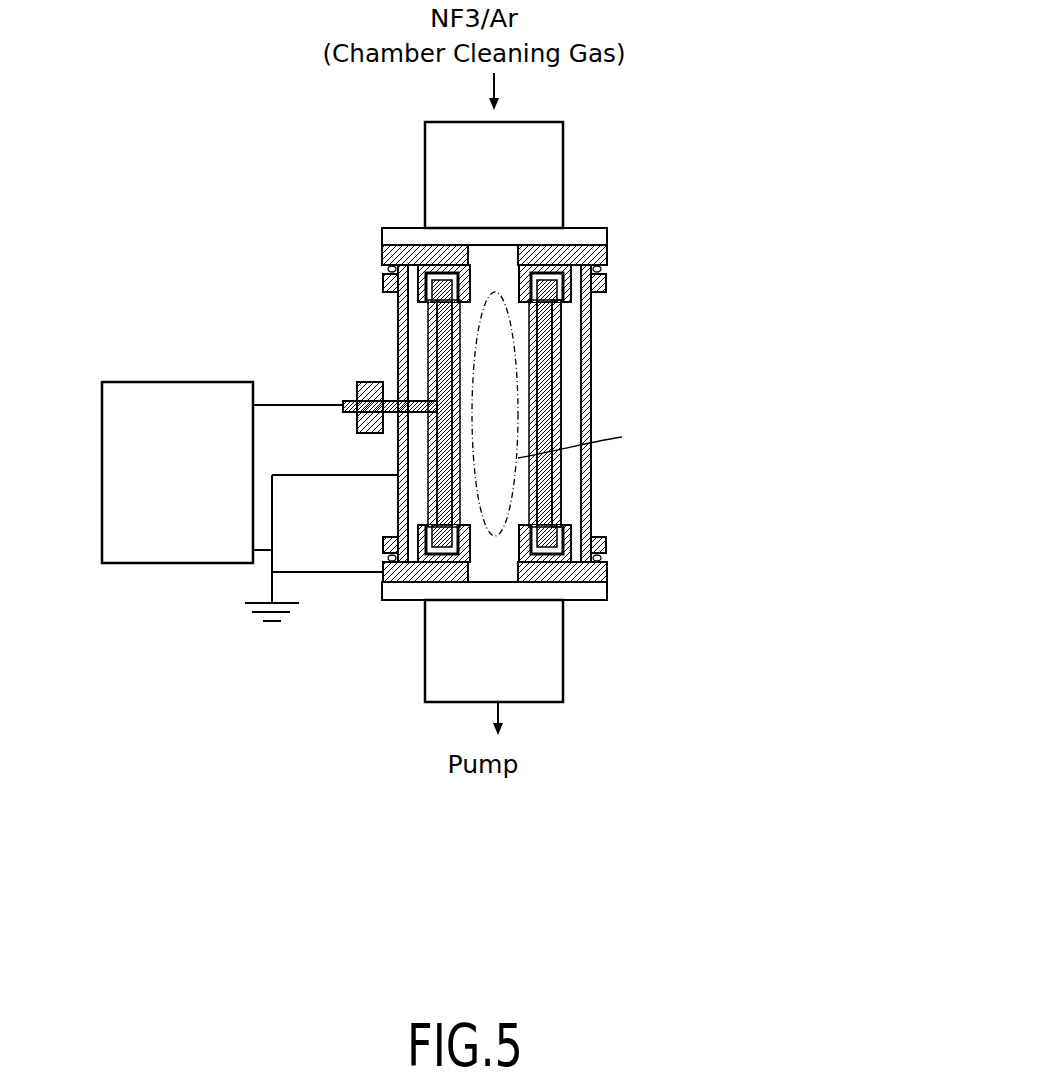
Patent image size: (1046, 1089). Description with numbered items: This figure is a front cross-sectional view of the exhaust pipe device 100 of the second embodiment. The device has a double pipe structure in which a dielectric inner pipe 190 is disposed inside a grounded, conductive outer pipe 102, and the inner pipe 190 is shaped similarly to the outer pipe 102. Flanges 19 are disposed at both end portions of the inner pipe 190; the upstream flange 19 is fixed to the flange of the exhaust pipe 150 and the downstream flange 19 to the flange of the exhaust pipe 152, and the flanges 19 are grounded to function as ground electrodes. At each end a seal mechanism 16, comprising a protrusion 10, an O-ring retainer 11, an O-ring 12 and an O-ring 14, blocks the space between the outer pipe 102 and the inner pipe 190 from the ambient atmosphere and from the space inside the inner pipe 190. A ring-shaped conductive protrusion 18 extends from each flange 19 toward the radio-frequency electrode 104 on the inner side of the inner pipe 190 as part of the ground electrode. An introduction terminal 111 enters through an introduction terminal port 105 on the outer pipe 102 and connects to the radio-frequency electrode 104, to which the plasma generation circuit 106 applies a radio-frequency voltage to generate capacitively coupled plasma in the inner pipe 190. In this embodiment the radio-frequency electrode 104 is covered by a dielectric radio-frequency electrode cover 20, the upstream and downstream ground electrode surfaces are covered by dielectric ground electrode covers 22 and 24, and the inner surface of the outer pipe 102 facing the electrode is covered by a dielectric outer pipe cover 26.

The exhaust pipe device 100 is at (748, 312).
The outer pipe 102 is at (593, 412).
The radio-frequency electrode 104 is at (550, 382).
The introduction terminal port 105 is at (357, 390).
The plasma generation circuit 106 is at (182, 565).
The introduction terminal 111 is at (343, 415).
The exhaust pipe 150 is at (563, 140).
The exhaust pipe 152 is at (563, 658).
The inner pipe 190 is at (593, 320).
The protrusion 10 is at (607, 250).
The O-ring retainer 11 is at (607, 262).
The O-ring 12 is at (607, 231).
The O-ring 14 is at (607, 268).
The seal mechanism 16 is at (569, 369).
The protrusion 18 is at (445, 240).
The flange 19 is at (383, 252).
The radio-frequency electrode cover 20 is at (425, 318).
The ground electrode cover 22 is at (383, 278).
The ground electrode cover 24 is at (385, 542).
The outer pipe cover 26 is at (398, 510).